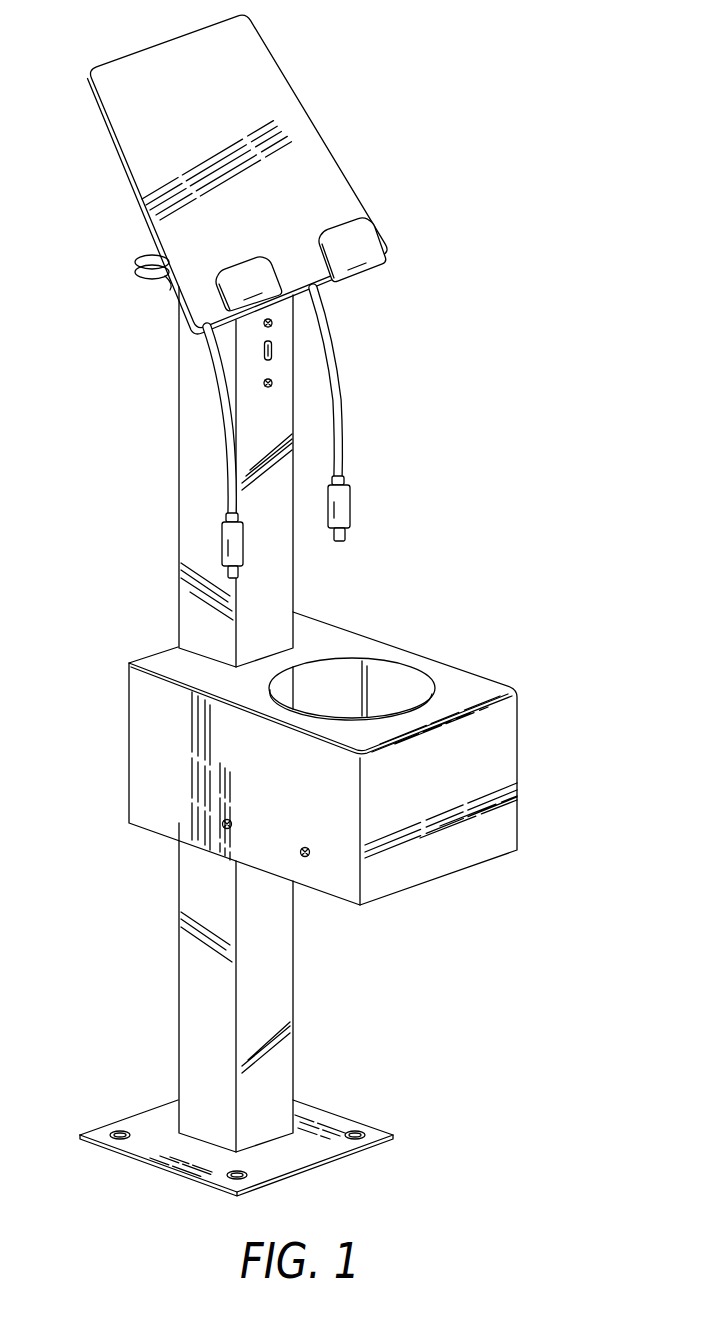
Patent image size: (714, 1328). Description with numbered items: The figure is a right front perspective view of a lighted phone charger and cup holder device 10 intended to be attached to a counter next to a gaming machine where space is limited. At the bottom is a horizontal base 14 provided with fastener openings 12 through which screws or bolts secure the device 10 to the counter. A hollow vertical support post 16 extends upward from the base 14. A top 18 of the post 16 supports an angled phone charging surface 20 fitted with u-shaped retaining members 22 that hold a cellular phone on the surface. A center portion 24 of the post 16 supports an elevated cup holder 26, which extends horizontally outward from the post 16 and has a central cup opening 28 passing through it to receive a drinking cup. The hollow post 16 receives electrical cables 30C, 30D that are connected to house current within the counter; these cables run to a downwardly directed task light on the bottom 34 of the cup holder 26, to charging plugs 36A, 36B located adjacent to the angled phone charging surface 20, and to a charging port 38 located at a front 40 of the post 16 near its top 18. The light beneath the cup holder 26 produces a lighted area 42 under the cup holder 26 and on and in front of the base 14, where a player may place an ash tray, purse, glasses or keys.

The lighted phone charger and cup holder device 10 is at (438, 134).
The fastener openings 12 is at (120, 1128).
The horizontal base 14 is at (310, 1110).
The hollow vertical support post 16 is at (283, 572).
The top of the post 18 is at (187, 343).
The angled phone charging surface 20 is at (237, 82).
The u-shaped retaining members 22 is at (360, 243).
The center portion of the post 24 is at (193, 633).
The elevated cup holder 26 is at (468, 690).
The central cup opening 28 is at (400, 655).
The electrical cable 30C is at (339, 390).
The electrical cable 30D is at (220, 390).
The bottom of the cup holder 34 is at (340, 900).
The charging plug 36A is at (346, 500).
The charging plug 36B is at (232, 540).
The charging port 38 is at (277, 351).
The front of the post 40 is at (277, 595).
The lighted area 42 is at (410, 1175).